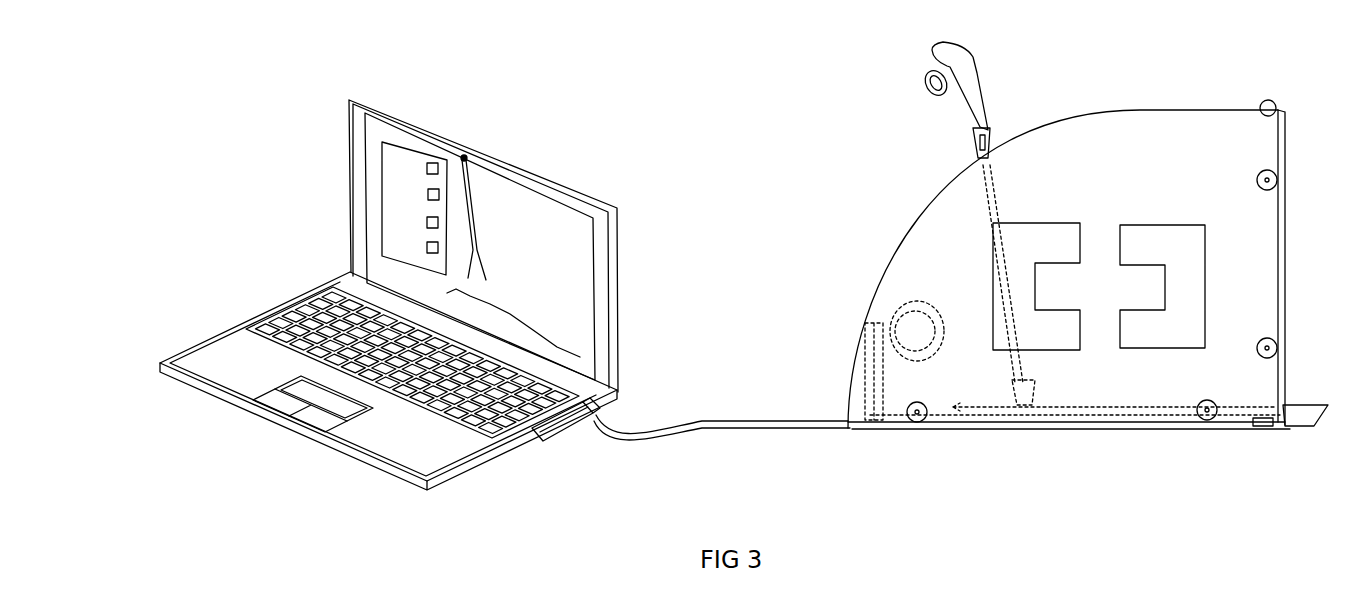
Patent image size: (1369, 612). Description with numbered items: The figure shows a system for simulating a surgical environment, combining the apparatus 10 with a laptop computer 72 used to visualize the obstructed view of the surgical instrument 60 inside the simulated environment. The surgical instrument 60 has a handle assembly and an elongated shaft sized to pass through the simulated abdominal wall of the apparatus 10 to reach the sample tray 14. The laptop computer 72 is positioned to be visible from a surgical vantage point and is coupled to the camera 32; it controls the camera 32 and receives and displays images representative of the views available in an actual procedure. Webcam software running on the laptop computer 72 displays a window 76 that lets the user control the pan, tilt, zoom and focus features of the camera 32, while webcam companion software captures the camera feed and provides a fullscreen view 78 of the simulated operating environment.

The apparatus 10 is at (1104, 236).
The sample tray 14 is at (1300, 405).
The camera 32 is at (910, 302).
The surgical instrument 60 is at (1002, 54).
The laptop computer 72 is at (505, 268).
The window 76 is at (390, 147).
The fullscreen view 78 is at (485, 202).